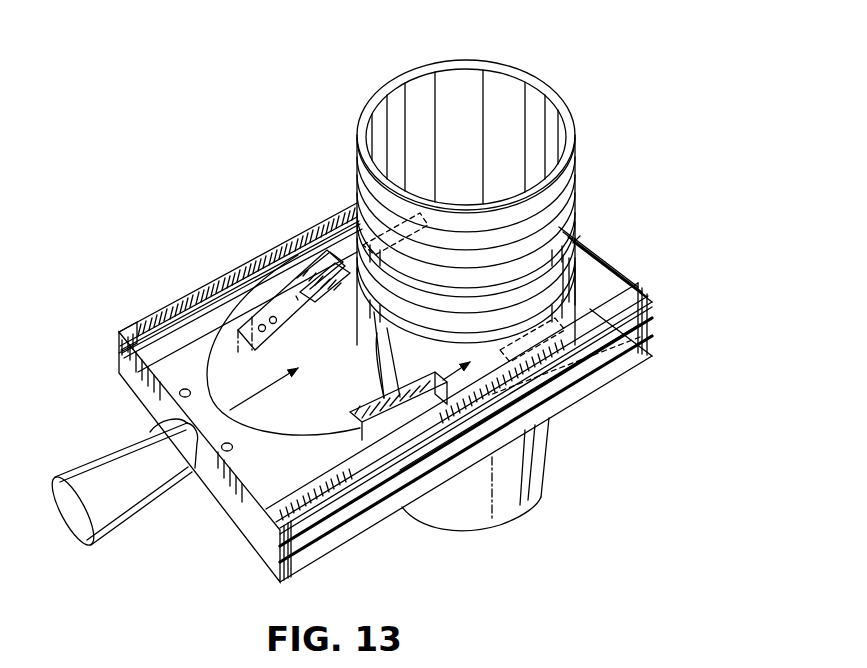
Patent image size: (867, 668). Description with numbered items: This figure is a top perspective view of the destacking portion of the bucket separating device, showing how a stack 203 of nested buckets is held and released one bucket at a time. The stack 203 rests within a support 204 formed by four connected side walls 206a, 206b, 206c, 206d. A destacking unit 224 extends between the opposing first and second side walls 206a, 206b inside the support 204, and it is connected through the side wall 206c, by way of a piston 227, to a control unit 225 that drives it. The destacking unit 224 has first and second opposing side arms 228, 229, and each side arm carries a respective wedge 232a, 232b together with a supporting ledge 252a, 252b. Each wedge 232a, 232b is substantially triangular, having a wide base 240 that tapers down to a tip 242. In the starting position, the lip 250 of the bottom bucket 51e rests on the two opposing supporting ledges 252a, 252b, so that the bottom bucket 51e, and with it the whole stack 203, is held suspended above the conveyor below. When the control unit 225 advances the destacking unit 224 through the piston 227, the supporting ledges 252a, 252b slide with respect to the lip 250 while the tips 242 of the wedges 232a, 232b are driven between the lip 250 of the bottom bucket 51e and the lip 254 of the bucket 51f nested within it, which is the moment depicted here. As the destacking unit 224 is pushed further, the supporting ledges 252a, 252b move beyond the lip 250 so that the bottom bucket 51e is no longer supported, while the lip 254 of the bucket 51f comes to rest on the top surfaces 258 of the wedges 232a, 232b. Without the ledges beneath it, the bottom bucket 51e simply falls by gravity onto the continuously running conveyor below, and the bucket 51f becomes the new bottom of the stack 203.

The stack 203 is at (612, 130).
The support 204 is at (172, 297).
The first side wall 206a is at (655, 330).
The second side wall 206b is at (147, 318).
The side wall 206c is at (262, 542).
The side wall 206d is at (555, 383).
The destacking unit 224 is at (168, 362).
The control unit 225 is at (120, 507).
The piston 227 is at (160, 427).
The first side arm 228 is at (250, 293).
The second side arm 229 is at (430, 417).
The wedge 232a is at (283, 333).
The wedge 232b is at (360, 428).
The wide base 240 is at (238, 337).
The tip 242 is at (298, 298).
The lip 250 is at (377, 333).
The supporting ledge 252a is at (352, 200).
The supporting ledge 252b is at (645, 335).
The lip 254 is at (573, 250).
The top surface 258 is at (296, 296).
The bottom bucket 51e is at (533, 453).
The bucket 51f is at (578, 262).